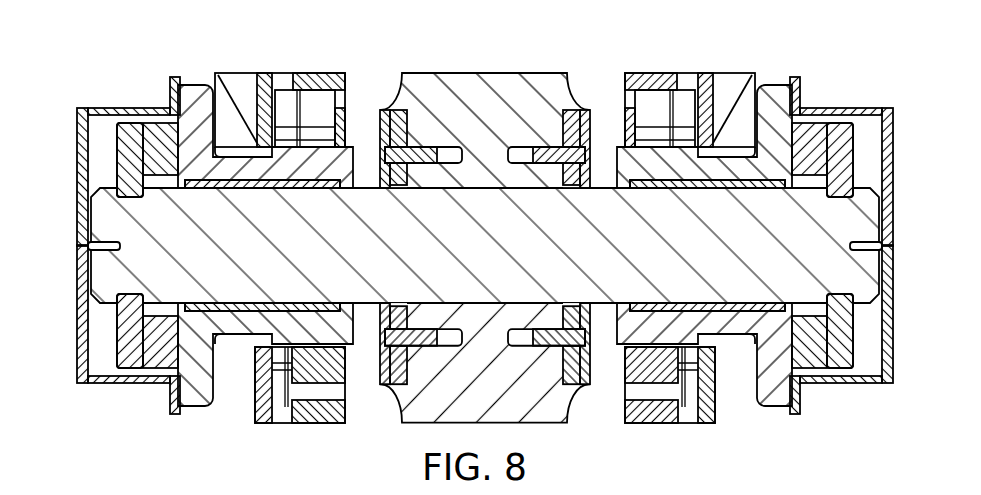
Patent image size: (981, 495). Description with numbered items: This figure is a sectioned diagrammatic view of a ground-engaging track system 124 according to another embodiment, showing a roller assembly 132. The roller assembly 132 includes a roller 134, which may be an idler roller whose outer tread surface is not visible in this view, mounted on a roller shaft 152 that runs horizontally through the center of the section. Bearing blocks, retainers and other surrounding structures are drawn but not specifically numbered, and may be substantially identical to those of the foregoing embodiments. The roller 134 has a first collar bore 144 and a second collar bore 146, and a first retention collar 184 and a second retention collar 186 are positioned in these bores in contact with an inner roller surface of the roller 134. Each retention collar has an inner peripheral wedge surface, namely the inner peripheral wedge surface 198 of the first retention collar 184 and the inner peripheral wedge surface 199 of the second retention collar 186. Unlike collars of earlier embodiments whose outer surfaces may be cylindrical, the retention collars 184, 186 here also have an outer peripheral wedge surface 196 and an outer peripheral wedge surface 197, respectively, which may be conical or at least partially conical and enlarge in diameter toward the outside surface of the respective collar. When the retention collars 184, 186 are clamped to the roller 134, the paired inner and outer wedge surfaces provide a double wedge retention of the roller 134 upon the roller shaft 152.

The ground-engaging track system 124 is at (760, 52).
The roller assembly 132 is at (503, 219).
The roller 134 is at (512, 80).
The first collar bore 144 is at (411, 143).
The second collar bore 146 is at (560, 143).
The roller shaft 152 is at (100, 275).
The first retention collar 184 is at (404, 184).
The second retention collar 186 is at (573, 310).
The outer peripheral wedge surface 196 is at (406, 143).
The outer peripheral wedge surface 197 is at (564, 143).
The inner peripheral wedge surface 198 is at (393, 189).
The inner peripheral wedge surface 199 is at (572, 189).